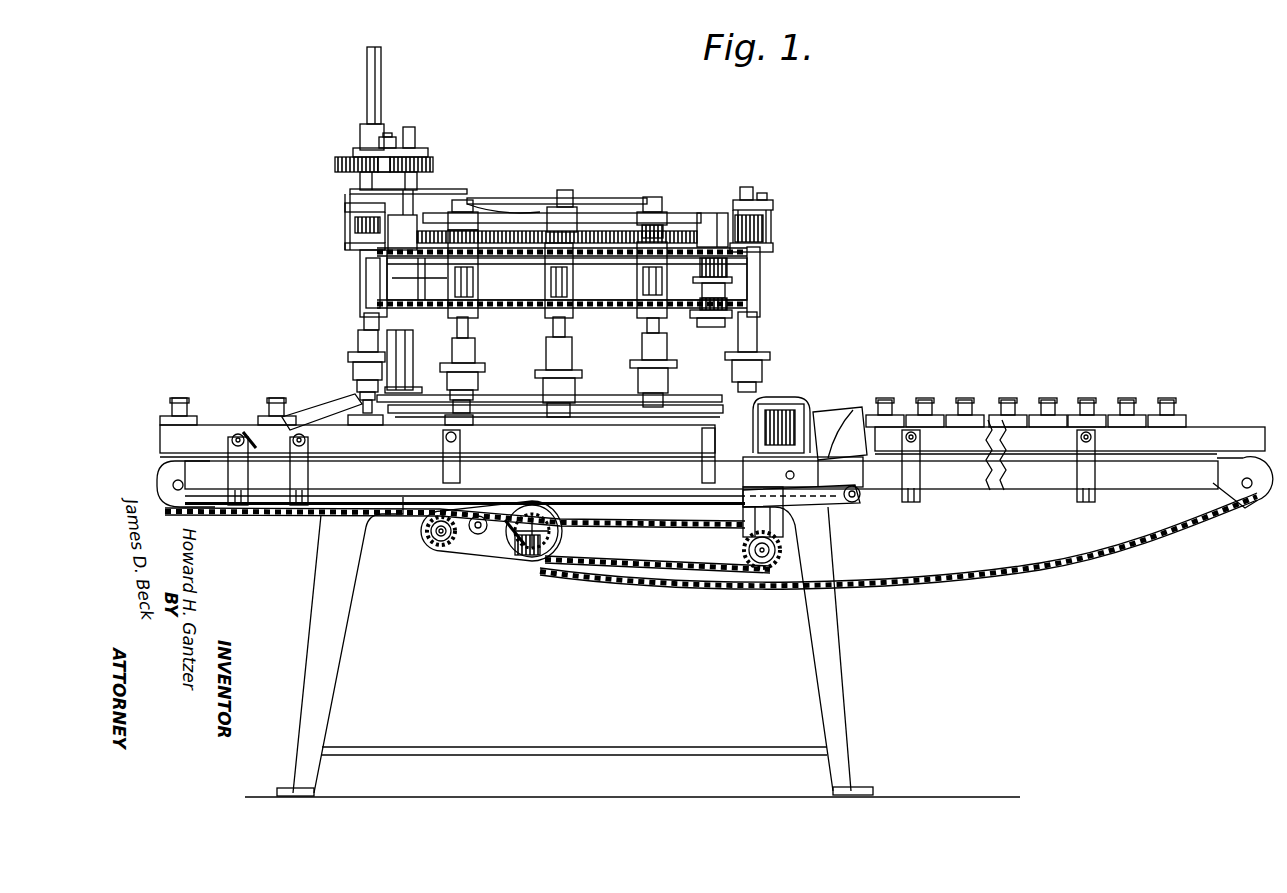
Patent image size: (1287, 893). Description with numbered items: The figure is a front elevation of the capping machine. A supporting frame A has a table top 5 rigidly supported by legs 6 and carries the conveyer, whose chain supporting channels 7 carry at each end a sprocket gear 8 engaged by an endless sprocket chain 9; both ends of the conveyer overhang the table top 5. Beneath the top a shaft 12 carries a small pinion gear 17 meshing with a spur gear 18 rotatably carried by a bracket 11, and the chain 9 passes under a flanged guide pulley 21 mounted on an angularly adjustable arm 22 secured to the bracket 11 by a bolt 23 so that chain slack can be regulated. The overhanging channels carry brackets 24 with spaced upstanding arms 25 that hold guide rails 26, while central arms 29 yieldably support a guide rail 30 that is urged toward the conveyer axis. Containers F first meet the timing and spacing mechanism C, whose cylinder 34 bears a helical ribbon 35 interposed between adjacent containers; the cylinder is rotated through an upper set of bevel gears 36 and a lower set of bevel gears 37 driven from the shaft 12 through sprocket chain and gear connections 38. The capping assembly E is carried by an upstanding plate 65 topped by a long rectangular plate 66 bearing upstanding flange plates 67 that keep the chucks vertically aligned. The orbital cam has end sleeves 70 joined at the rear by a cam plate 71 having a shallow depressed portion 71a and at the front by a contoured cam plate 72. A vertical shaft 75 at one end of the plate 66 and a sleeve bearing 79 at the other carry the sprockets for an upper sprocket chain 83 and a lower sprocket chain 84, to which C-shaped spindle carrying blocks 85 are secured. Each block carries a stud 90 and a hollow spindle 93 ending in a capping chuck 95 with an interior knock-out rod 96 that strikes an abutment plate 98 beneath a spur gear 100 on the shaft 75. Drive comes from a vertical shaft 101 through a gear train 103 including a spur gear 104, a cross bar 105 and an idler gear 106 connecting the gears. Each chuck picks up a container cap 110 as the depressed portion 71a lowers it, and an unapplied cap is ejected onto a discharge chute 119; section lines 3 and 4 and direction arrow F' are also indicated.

The table top 5 is at (416, 494).
The legs 6 is at (308, 628).
The chain supporting channels 7 is at (314, 529).
The sprocket gear 8 is at (186, 496).
The sprocket chain 9 is at (208, 513).
The bracket 11 is at (481, 556).
The shaft 12 is at (432, 547).
The pinion gear 17 is at (426, 531).
The spur gear 18 is at (470, 548).
The flanged guide pulley 21 is at (560, 538).
The angularly adjustable arm 22 is at (536, 562).
The bolt 23 is at (512, 556).
The brackets 24 is at (290, 498).
The upstanding arms 25 is at (232, 477).
The guide rails 26 is at (1228, 418).
The upstanding arms 29 is at (462, 468).
The guide rail 30 is at (595, 446).
The cylinder 34 is at (834, 473).
The helical ribbon 35 is at (803, 472).
The upper set of bevel gears 36 is at (806, 396).
The lower set of bevel gears 37 is at (784, 538).
The sprocket chain and gear connections 38 is at (666, 558).
The upstanding plate 65 is at (676, 339).
The rectangular plate 66 is at (366, 278).
The flange plates 67 is at (484, 262).
The sleeves 70 is at (710, 213).
The cam plate 71 is at (594, 226).
The depressed portion 71a is at (500, 224).
The cam plate 72 is at (652, 222).
The shaft 75 is at (417, 133).
The sleeve bearing 79 is at (724, 297).
The sprocket chain 83 is at (584, 256).
The sprocket chain 84 is at (485, 306).
The spindle carrying blocks 85 is at (340, 304).
The stud 90 is at (767, 218).
The hollow spindle 93 is at (556, 331).
The capping chuck 95 is at (578, 392).
The knock-out rod 96 is at (550, 207).
The abutment plate 98 is at (456, 190).
The spur gear 100 is at (433, 163).
The shaft 101 is at (382, 62).
The gear train 103 is at (393, 133).
The spur gear 104 is at (337, 164).
The cross bar 105 is at (357, 152).
The idler gear 106 is at (372, 178).
The container cap 110 is at (740, 388).
The discharge chute 119 is at (352, 400).
The section line 3- 3 is at (336, 390).
The section line 4- 4 is at (335, 237).
The supporting frame A is at (310, 568).
The timing and spacing mechanism C is at (836, 452).
The capping assembly E is at (615, 214).
The containers F is at (495, 433).
The direction F' is at (1098, 379).